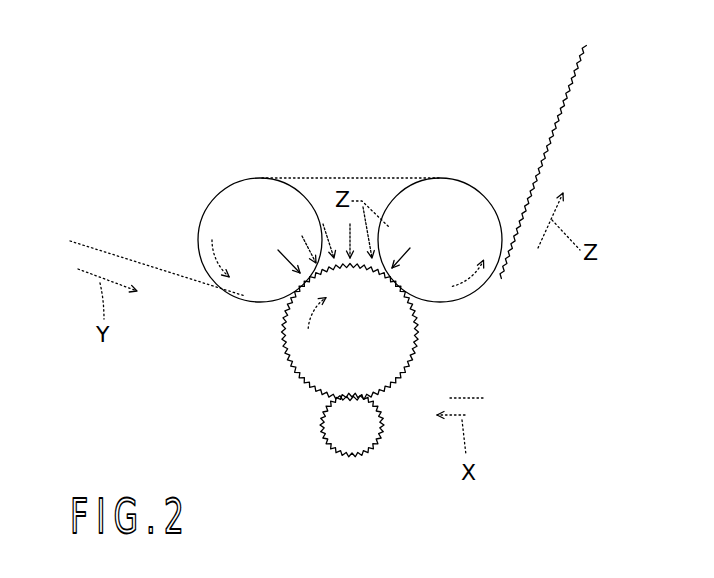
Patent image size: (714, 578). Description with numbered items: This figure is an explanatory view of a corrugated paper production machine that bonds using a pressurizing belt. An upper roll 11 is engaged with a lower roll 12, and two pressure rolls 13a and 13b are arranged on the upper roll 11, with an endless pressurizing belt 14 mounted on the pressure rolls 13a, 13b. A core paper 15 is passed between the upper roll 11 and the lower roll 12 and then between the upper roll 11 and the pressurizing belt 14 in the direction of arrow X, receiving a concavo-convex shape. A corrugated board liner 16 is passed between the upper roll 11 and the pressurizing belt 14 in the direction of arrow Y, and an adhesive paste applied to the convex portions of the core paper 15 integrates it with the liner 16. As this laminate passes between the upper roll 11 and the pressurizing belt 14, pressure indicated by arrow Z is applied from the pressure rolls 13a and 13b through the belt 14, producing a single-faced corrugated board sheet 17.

The upper roll 11 is at (430, 336).
The lower roll 12 is at (352, 460).
The pressure roll 13a is at (217, 173).
The pressure roll 13b is at (487, 173).
The pressurizing belt 14 is at (349, 178).
The core paper 15 is at (493, 383).
The corrugated board liner 16 is at (119, 254).
The single-faced corrugated board sheet 17 is at (547, 83).